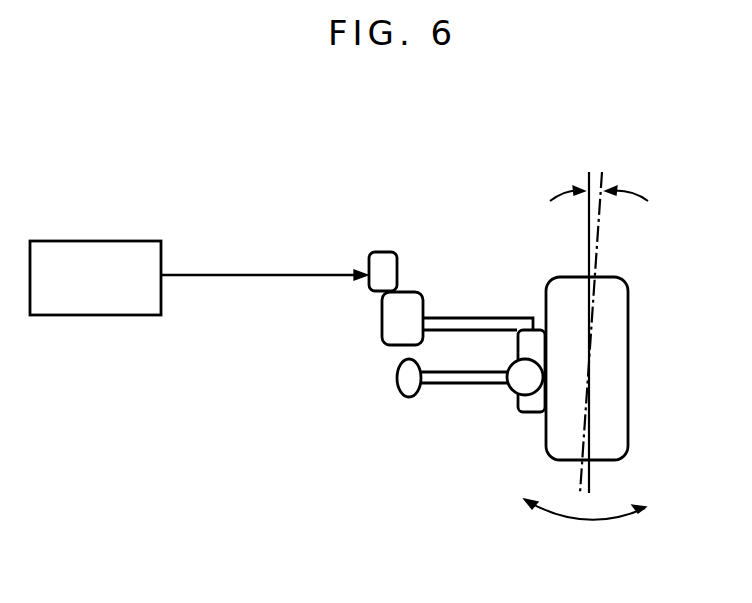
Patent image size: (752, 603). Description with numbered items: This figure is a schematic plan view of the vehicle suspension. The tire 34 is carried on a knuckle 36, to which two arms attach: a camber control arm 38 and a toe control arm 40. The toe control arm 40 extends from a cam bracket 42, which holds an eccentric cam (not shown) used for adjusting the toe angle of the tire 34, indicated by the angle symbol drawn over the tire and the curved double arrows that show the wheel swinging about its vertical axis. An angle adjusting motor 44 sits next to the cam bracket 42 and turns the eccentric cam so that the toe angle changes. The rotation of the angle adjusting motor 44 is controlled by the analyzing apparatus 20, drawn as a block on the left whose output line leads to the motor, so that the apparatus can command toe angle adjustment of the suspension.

The analyzing apparatus 20 is at (97, 241).
The angle adjusting motor 44 is at (368, 261).
The cam bracket 42 is at (382, 323).
The toe control arm 40 is at (462, 316).
The camber control arm 38 is at (447, 388).
The knuckle 36 is at (532, 412).
The tire 34 is at (630, 328).